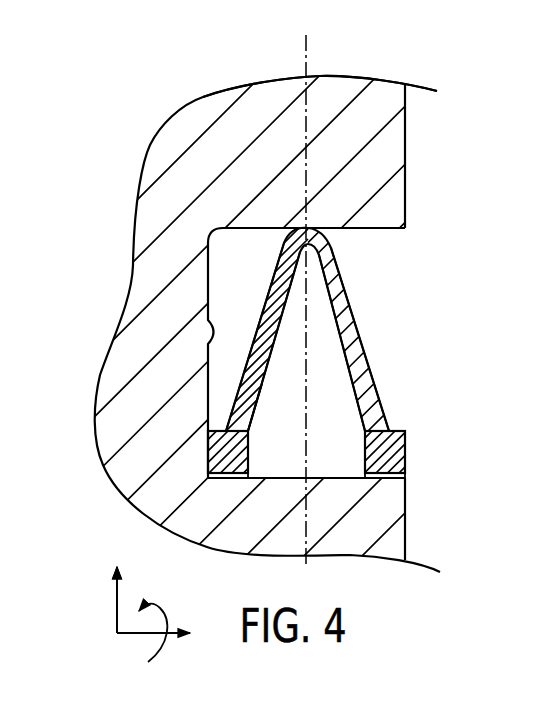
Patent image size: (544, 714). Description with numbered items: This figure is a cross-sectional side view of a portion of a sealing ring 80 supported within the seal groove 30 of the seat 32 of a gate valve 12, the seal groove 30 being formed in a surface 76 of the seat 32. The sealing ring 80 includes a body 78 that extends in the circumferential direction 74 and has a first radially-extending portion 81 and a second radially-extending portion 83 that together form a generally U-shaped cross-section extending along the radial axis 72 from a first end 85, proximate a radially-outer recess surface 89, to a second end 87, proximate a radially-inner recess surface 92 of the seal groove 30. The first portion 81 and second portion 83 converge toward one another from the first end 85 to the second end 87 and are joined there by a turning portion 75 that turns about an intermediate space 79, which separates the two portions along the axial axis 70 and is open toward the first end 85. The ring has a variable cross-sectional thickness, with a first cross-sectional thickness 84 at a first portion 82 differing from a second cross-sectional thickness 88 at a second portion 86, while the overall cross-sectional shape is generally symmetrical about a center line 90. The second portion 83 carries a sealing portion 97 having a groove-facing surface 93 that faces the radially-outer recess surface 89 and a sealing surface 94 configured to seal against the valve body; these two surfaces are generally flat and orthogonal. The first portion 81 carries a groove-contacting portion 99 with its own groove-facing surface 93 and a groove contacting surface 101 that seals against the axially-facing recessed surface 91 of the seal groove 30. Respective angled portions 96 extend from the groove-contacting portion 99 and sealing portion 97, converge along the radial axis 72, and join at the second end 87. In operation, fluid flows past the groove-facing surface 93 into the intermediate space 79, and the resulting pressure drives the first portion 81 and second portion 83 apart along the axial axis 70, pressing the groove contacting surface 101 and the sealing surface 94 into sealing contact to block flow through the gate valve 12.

The gate valve 12 is at (426, 72).
The seal groove 30 is at (402, 252).
The seat 32 is at (405, 97).
The axial axis 70 is at (150, 636).
The radial axis 72 is at (117, 600).
The circumferential direction 74 is at (160, 608).
The turning portion 75 is at (326, 234).
The surface 76 is at (405, 138).
The body 78 is at (361, 349).
The intermediate space 79 is at (342, 436).
The sealing ring 80 is at (272, 357).
The first radially-extending portion 81 is at (273, 280).
The first portion of the sealing ring 82 is at (223, 400).
The second radially-extending portion 83 is at (375, 396).
The first cross-sectional thickness 84 is at (223, 480).
The first end 85 is at (373, 481).
The second portion of the sealing ring 86 is at (254, 342).
The second end 87 is at (342, 206).
The second cross-sectional thickness 88 is at (267, 386).
The radially-outer recess surface 89 is at (264, 473).
The center line 90 is at (305, 51).
The axially-facing recessed surface 91 is at (207, 350).
The radially-inner recess surface 92 is at (243, 229).
The groove-facing surface 93 is at (394, 478).
The sealing surface 94 is at (399, 443).
The angled portions 96 is at (337, 315).
The sealing portion 97 is at (398, 462).
The groove-contacting portion 99 is at (208, 452).
The groove contacting surface 101 is at (216, 453).